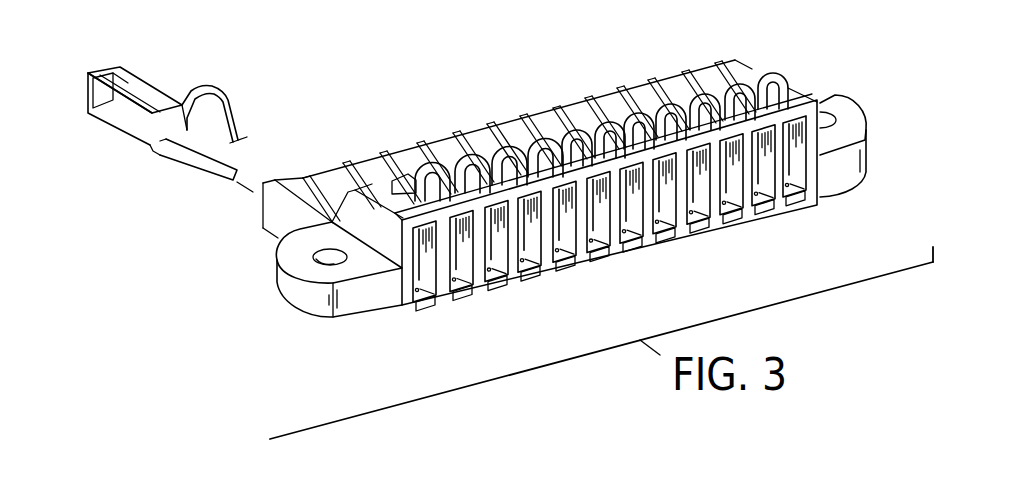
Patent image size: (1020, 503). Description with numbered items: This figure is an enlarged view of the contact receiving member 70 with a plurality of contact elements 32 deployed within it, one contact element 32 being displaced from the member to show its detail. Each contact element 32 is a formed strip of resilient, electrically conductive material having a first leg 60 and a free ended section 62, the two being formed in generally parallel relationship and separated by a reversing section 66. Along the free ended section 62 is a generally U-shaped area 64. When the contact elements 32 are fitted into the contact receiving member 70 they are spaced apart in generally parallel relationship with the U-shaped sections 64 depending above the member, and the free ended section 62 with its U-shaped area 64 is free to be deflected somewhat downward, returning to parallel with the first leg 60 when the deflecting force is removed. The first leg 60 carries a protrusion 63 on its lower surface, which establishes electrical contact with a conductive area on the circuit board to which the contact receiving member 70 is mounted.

The contact element 32 is at (88, 91).
The first leg 60 is at (205, 173).
The free ended section 62 is at (143, 82).
The protrusion 63 is at (157, 157).
The U-shaped area 64 is at (222, 106).
The reversing section 66 is at (107, 97).
The contact receiving member 70 is at (300, 295).